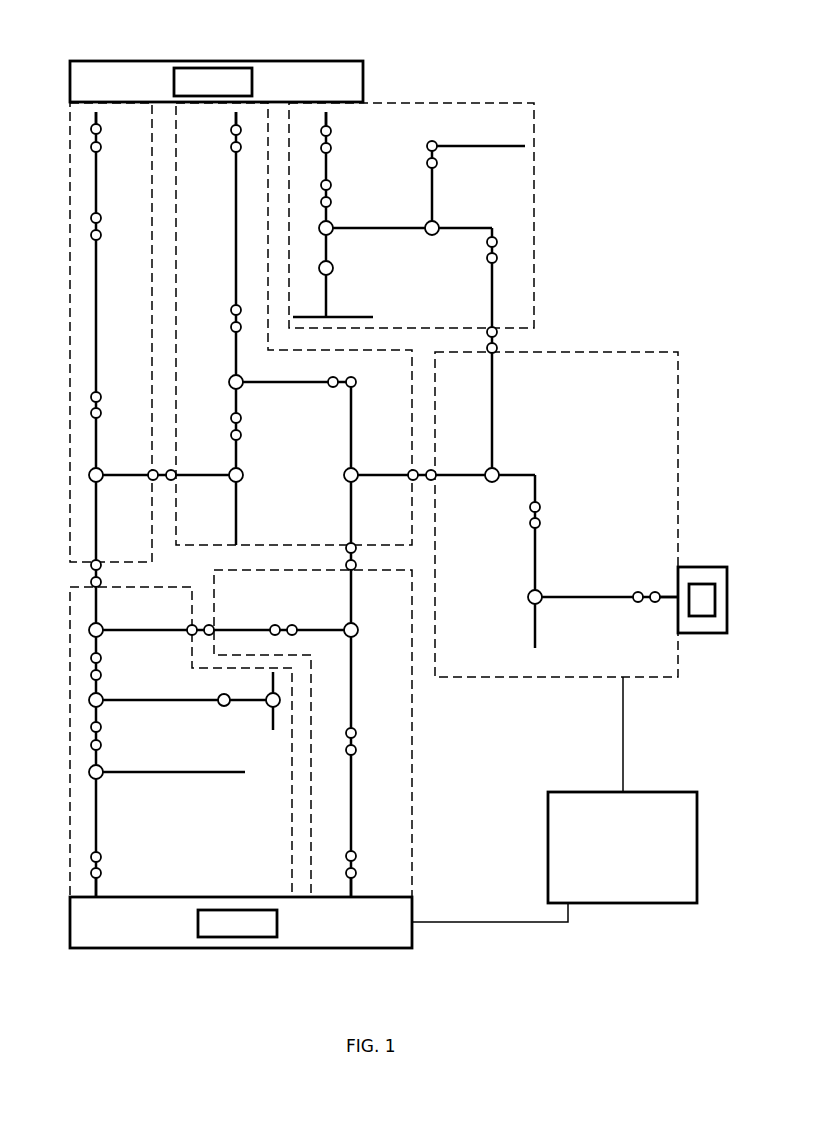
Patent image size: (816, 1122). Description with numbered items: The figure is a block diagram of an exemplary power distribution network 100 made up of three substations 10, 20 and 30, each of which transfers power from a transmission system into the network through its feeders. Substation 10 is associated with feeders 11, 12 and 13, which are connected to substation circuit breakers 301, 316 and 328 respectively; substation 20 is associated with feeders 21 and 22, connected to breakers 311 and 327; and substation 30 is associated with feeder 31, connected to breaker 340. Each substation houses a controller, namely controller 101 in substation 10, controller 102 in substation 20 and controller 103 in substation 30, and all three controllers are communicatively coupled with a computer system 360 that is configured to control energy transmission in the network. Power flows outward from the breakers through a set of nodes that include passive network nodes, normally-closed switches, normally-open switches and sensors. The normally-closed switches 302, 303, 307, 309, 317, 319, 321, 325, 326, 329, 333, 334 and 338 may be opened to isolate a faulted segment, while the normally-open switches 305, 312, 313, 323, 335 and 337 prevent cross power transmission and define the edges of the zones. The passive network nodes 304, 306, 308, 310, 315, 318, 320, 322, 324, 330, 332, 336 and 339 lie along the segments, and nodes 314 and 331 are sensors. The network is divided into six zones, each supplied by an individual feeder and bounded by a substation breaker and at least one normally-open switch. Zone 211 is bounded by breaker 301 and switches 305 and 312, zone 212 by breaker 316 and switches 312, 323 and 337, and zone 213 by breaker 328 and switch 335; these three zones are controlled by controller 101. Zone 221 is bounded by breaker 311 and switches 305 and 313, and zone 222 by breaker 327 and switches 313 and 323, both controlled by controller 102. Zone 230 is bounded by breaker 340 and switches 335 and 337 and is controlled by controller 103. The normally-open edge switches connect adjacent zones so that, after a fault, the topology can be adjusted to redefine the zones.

The power distribution network 100 is at (377, 485).
The substation 10 is at (70, 72).
The controller 101 is at (252, 86).
The feeder 11 is at (98, 118).
The feeder 12 is at (234, 118).
The feeder 13 is at (329, 118).
The substation 20 is at (412, 908).
The controller 102 is at (277, 928).
The feeder 21 is at (98, 891).
The feeder 22 is at (356, 888).
The substation 30 is at (700, 567).
The controller 103 is at (703, 616).
The feeder 31 is at (666, 592).
The zone 211 is at (70, 118).
The zone 212 is at (264, 545).
The zone 213 is at (534, 178).
The zone 221 is at (70, 845).
The zone 222 is at (412, 793).
The zone 230 is at (648, 352).
The computer system 360 is at (676, 792).
The substation circuit breaker 301 is at (101, 140).
The normally-closed switch 302 is at (91, 222).
The normally-closed switch 303 is at (100, 410).
The passive network node 304 is at (102, 470).
The normally-open switch 305 is at (91, 575).
The passive network node 306 is at (103, 627).
The normally-closed switch 307 is at (91, 664).
The passive network node 308 is at (90, 701).
The normally-closed switch 309 is at (101, 733).
The passive network node 310 is at (102, 780).
The substation circuit breaker 311 is at (101, 859).
The normally-open switch 312 is at (164, 484).
The normally-open switch 313 is at (197, 638).
The sensor 314 is at (220, 706).
The passive network node 315 is at (268, 712).
The substation circuit breaker 316 is at (231, 141).
The normally-closed switch 317 is at (232, 315).
The passive network node 318 is at (231, 379).
The normally-closed switch 319 is at (231, 423).
The passive network node 320 is at (243, 470).
The normally-closed switch 321 is at (336, 377).
The passive network node 322 is at (356, 483).
The normally-open switch 323 is at (347, 560).
The passive network node 324 is at (358, 632).
The normally-closed switch 325 is at (274, 625).
The normally-closed switch 326 is at (356, 741).
The substation circuit breaker 327 is at (356, 867).
The substation circuit breaker 328 is at (331, 140).
The normally-closed switch 329 is at (332, 196).
The passive network node 330 is at (333, 234).
The sensor 331 is at (334, 271).
The passive network node 332 is at (438, 223).
The normally-closed switch 333 is at (427, 142).
The normally-closed switch 334 is at (487, 252).
The normally-open switch 335 is at (498, 341).
The passive network node 336 is at (498, 470).
The normally-open switch 337 is at (430, 483).
The normally-closed switch 338 is at (540, 516).
The passive network node 339 is at (528, 600).
The substation circuit breaker 340 is at (648, 606).